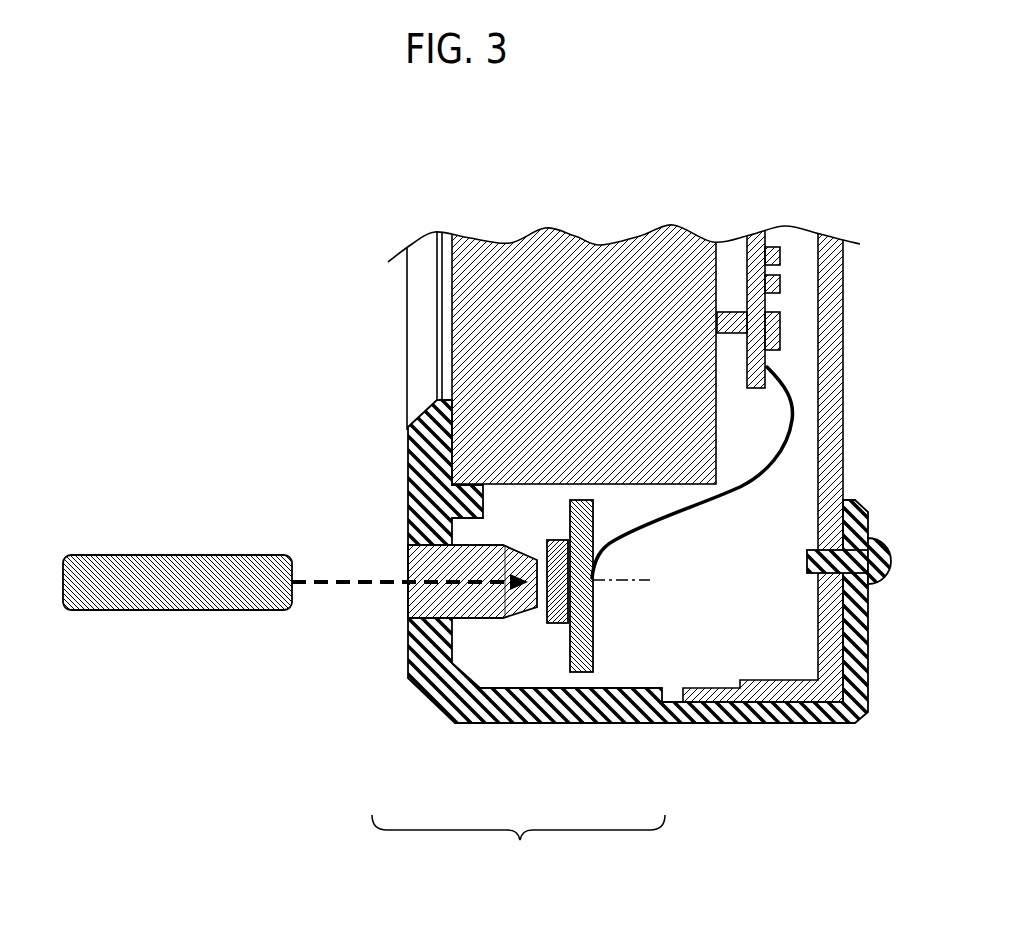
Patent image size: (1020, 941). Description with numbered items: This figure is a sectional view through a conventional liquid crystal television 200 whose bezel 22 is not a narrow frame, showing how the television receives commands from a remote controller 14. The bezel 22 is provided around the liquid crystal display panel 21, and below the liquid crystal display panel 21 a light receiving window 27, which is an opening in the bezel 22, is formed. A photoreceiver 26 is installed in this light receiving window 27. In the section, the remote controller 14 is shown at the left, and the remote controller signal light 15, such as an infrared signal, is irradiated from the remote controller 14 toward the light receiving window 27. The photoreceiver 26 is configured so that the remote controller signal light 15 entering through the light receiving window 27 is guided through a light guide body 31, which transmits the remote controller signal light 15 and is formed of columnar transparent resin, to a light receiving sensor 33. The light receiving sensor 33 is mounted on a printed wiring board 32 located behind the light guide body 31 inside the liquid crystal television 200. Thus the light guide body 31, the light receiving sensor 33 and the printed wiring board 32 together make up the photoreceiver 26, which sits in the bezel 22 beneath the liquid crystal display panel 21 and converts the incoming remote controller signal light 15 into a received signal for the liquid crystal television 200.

The remote controller 14 is at (113, 585).
The remote controller signal light 15 is at (357, 585).
The liquid crystal display panel 21 is at (553, 300).
The bezel 22 is at (408, 487).
The photoreceiver 26 is at (518, 844).
The light receiving window 27 is at (408, 618).
The light guide body 31 is at (468, 607).
The printed wiring board 32 is at (593, 672).
The light receiving sensor 33 is at (550, 623).
The liquid crystal television 200 is at (857, 259).